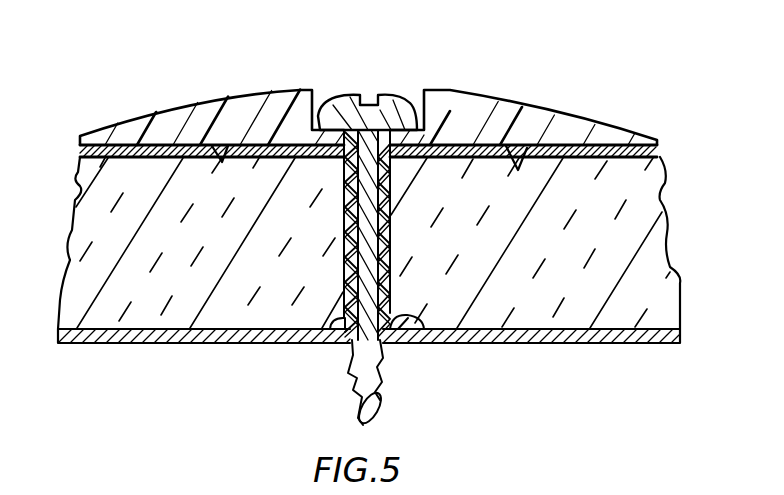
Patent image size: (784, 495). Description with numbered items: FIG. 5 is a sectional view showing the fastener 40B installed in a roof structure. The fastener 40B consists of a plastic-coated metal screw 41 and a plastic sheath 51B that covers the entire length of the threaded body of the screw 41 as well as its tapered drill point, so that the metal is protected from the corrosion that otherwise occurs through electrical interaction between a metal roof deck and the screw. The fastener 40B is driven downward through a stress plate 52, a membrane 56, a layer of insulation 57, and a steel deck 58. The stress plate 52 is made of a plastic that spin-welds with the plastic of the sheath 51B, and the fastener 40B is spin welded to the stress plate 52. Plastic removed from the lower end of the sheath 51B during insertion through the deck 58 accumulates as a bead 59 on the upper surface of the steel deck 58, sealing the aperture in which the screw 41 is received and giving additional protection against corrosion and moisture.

The fastener 40B is at (400, 65).
The screw 41 is at (350, 225).
The sheath 51B is at (322, 102).
The stress plate 52 is at (193, 120).
The membrane 56 is at (129, 124).
The layer of insulation 57 is at (78, 186).
The steel deck 58 is at (100, 340).
The bead 59 is at (410, 343).